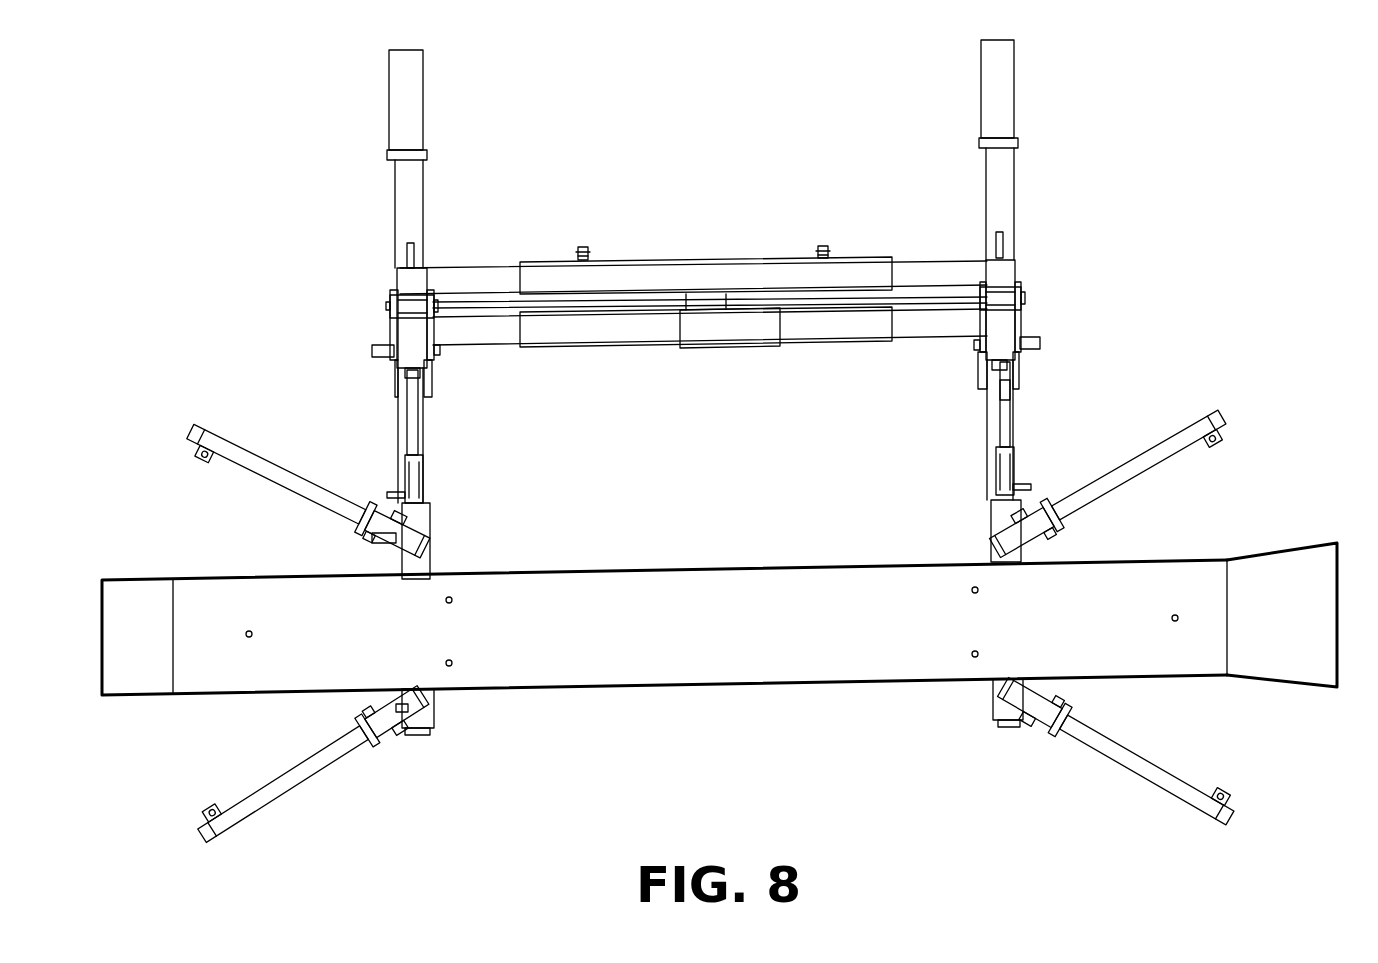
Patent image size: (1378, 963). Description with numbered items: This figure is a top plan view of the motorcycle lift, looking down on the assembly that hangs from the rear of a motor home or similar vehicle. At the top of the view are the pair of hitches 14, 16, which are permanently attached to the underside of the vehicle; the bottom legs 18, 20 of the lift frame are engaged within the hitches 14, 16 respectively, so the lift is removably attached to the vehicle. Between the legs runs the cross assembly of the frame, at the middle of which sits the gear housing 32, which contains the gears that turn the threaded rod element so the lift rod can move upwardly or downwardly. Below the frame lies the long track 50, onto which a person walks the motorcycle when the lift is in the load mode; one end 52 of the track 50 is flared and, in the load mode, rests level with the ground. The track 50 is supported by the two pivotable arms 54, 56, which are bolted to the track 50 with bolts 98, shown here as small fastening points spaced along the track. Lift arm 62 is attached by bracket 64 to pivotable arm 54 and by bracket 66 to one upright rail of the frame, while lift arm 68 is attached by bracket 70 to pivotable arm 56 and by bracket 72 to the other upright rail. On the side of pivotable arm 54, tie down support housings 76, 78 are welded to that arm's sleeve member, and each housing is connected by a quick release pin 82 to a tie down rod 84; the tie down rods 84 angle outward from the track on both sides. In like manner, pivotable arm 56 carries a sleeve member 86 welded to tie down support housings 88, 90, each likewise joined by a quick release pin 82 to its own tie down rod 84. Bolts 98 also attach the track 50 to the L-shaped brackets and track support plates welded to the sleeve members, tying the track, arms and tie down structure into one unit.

The hitch 14 is at (1003, 84).
The hitch 16 is at (400, 93).
The bottom leg 18 is at (1003, 194).
The bottom leg 20 is at (417, 195).
The gear housing 32 is at (728, 350).
The track 50 is at (732, 656).
The end of track 52 is at (1300, 578).
The pivotable arm 54 is at (1010, 422).
The pivotable arm 56 is at (428, 527).
The lift arm 62 is at (1000, 392).
The bracket 64 is at (998, 466).
The bracket 66 is at (1010, 368).
The lift arm 68 is at (420, 413).
The bracket 70 is at (423, 472).
The bracket 72 is at (400, 385).
The tie down support housing 76 is at (991, 541).
The tie down support housing 78 is at (1000, 690).
The quick release pin 82 is at (374, 518).
The tie down rod 84 is at (240, 452).
The sleeve member 86 is at (434, 714).
The tie down support housing 88 is at (395, 542).
The tie down support housing 90 is at (416, 722).
The bolts 98 is at (447, 601).